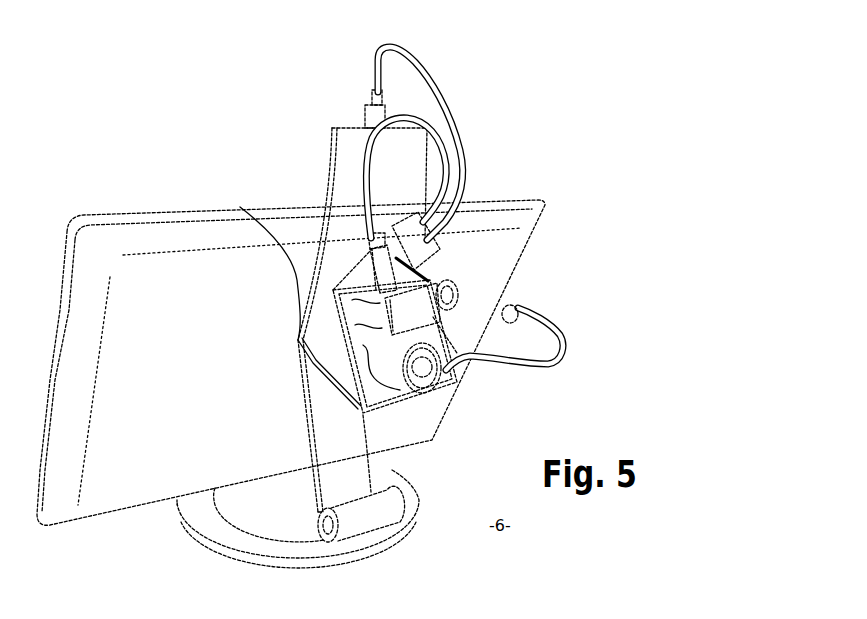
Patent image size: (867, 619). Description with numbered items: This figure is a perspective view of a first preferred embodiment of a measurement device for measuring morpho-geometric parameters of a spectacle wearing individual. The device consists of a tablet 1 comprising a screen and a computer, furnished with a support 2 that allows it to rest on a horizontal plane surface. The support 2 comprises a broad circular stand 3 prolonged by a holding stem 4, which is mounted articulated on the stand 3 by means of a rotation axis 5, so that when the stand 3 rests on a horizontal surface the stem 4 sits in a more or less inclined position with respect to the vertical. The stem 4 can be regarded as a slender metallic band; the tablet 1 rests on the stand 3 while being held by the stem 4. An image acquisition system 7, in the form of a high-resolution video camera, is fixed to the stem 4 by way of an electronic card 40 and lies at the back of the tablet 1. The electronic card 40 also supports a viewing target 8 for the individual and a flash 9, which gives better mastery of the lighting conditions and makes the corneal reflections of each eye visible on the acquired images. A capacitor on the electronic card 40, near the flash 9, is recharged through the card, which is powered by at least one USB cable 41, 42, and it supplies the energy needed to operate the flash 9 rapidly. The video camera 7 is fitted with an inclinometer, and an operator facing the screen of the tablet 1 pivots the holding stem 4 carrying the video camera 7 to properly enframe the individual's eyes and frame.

The tablet 1 is at (172, 394).
The support 2 is at (240, 537).
The stand 3 is at (323, 548).
The holding stem 4 is at (347, 437).
The rotation axis 5 is at (320, 522).
The image acquisition system 7 is at (452, 286).
The viewing target 8 is at (457, 313).
The flash 9 is at (450, 362).
The electronic card 40 is at (240, 207).
The USB cable 41 is at (362, 167).
The USB cable 42 is at (437, 80).